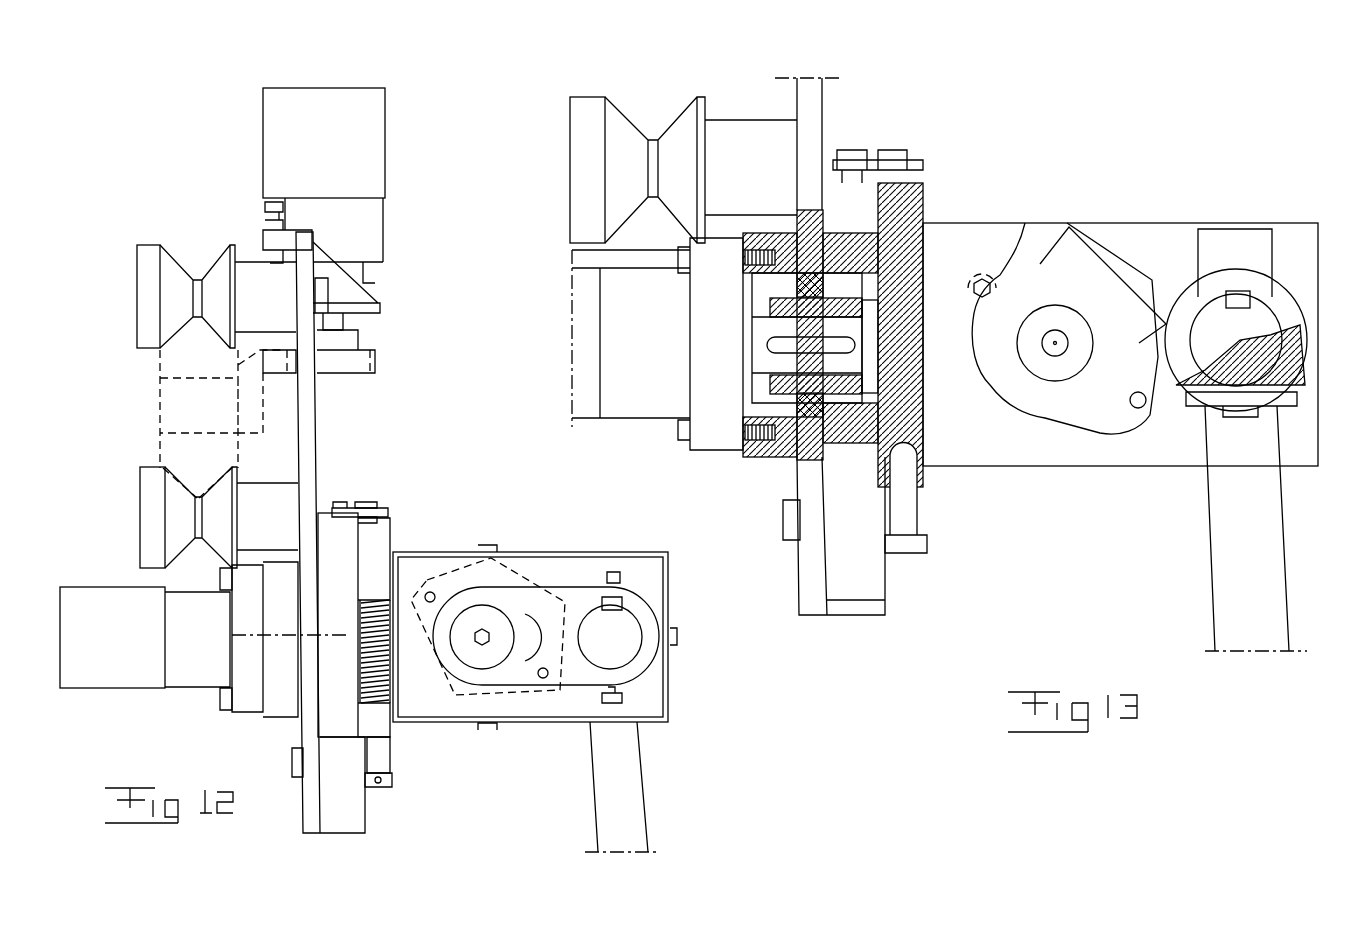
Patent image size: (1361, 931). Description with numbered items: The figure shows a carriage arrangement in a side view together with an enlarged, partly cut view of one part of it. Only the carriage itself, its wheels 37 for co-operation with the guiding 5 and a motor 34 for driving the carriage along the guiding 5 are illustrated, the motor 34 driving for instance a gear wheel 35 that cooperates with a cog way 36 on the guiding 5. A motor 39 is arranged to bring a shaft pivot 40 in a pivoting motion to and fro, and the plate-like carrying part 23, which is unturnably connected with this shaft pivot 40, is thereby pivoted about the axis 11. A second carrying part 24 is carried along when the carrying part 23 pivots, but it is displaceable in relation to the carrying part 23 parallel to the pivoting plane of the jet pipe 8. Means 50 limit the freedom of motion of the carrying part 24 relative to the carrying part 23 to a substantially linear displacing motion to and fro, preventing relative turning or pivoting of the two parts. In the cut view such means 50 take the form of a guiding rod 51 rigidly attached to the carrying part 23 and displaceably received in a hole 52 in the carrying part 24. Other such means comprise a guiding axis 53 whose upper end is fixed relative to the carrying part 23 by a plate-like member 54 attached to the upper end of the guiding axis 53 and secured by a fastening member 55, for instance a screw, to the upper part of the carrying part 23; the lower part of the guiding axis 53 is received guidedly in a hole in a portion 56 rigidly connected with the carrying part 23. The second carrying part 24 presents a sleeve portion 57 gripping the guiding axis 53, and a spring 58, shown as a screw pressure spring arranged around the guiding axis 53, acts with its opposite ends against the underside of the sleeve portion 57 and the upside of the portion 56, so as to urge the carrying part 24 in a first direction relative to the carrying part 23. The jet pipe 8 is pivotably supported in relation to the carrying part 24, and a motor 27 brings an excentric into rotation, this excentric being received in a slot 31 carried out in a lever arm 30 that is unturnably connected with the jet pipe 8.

In FIG. 12, the guiding 5 is at (173, 448).
In FIG. 12, the jet pipe 8 is at (635, 810).
In FIG. 13, the jet pipe 8 is at (1229, 596).
In FIG. 12, the axis 11 is at (255, 640).
In FIG. 12, the carrying part 23 is at (338, 718).
In FIG. 13, the carrying part 23 is at (862, 575).
In FIG. 12, the carrying part 24 is at (393, 569).
In FIG. 13, the carrying part 24 is at (925, 262).
In FIG. 13, the motor 27 is at (1145, 297).
In FIG. 12, the lever arm 30 is at (583, 598).
In FIG. 13, the lever arm 30 is at (1120, 344).
In FIG. 12, the slot 31 is at (527, 660).
In FIG. 12, the motor 34 is at (375, 150).
In FIG. 12, the gear wheel 35 is at (357, 360).
In FIG. 12, the cog way 36 is at (267, 363).
In FIG. 12, the wheels 37 is at (167, 263).
In FIG. 12, the motor 39 is at (118, 675).
In FIG. 13, the motor 39 is at (630, 397).
In FIG. 13, the shaft pivot 40 is at (772, 327).
In FIG. 12, the means for limiting freedom of motion 50 is at (400, 745).
In FIG. 13, the means for limiting freedom of motion 50 is at (920, 512).
In FIG. 12, the guiding rod 51 is at (395, 765).
In FIG. 13, the guiding rod 51 is at (905, 503).
In FIG. 13, the hole 52 is at (905, 427).
In FIG. 12, the guiding axis 53 is at (393, 535).
In FIG. 12, the plate-like member 54 is at (367, 508).
In FIG. 12, the fastening member 55 is at (340, 505).
In FIG. 12, the portion 56 is at (385, 738).
In FIG. 12, the sleeve portion 57 is at (367, 555).
In FIG. 12, the spring 58 is at (393, 660).